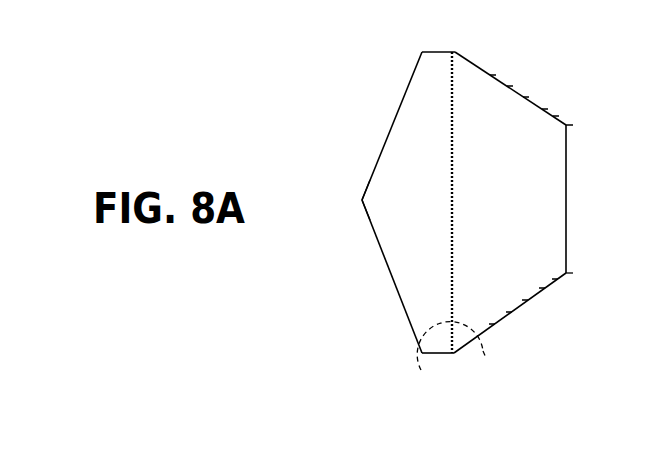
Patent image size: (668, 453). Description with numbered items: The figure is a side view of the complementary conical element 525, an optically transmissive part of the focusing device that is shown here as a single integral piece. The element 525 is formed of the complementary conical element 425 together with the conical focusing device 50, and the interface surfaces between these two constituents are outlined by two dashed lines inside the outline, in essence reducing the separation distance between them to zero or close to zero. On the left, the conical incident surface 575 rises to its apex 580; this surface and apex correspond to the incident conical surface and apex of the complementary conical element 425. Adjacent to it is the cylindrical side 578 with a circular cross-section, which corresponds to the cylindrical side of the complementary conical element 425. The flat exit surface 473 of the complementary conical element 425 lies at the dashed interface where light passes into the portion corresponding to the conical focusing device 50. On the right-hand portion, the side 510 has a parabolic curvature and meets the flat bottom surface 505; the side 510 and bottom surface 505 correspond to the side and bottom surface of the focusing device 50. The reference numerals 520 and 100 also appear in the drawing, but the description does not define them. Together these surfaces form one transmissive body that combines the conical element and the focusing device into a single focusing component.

The conical focusing device 50 is at (574, 160).
The complementary conical element 525 is at (430, 46).
The complementary conical element 425 is at (381, 122).
The side with parabolic curvature 510 is at (534, 101).
The flat bottom surface 505 is at (567, 273).
The lower right surface 520 is at (513, 325).
The cylindrical side 578 is at (444, 355).
The conical incident surface 575 is at (388, 272).
The apex 580 is at (362, 200).
The flat exit surface 473 is at (421, 370).
The light beam 100 is at (476, 352).